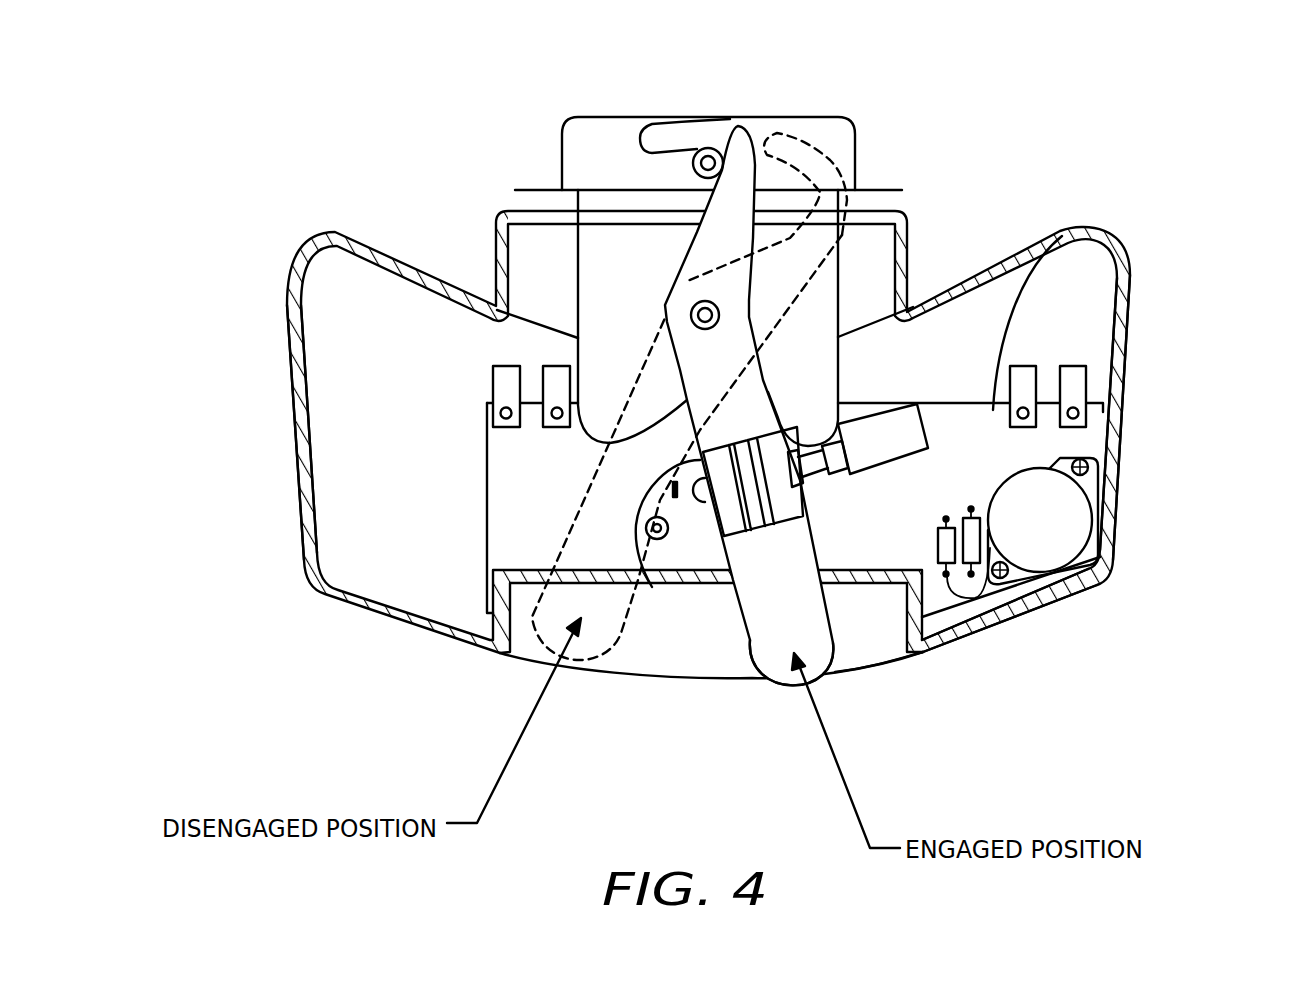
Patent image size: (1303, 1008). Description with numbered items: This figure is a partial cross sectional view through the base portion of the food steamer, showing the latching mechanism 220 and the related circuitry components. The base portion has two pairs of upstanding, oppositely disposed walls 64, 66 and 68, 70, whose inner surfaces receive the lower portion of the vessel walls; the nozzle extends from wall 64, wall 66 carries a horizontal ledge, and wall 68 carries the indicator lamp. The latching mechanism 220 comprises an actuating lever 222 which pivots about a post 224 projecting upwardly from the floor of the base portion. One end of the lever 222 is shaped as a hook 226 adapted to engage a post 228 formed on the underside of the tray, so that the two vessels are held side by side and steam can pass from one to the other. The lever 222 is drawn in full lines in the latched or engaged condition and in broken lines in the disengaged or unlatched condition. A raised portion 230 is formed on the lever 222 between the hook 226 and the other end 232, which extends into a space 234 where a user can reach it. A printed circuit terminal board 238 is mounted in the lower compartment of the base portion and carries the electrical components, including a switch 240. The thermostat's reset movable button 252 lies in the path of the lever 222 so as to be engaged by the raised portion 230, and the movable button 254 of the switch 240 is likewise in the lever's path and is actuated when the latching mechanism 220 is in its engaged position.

The wall 64 is at (972, 283).
The wall 66 is at (1080, 605).
The wall 68 is at (1125, 373).
The wall 70 is at (293, 420).
The latching mechanism 220 is at (718, 700).
The actuating lever 222 is at (770, 572).
The post 224 is at (690, 313).
The hook 226 is at (688, 129).
The post 228 is at (712, 140).
The raised portion 230 is at (770, 458).
The other end of lever 232 is at (787, 688).
The space 234 is at (853, 640).
The printed circuit terminal board 238 is at (1062, 234).
The switch 240 is at (925, 452).
The reset movable button 252 is at (693, 488).
The movable button 254 is at (813, 470).